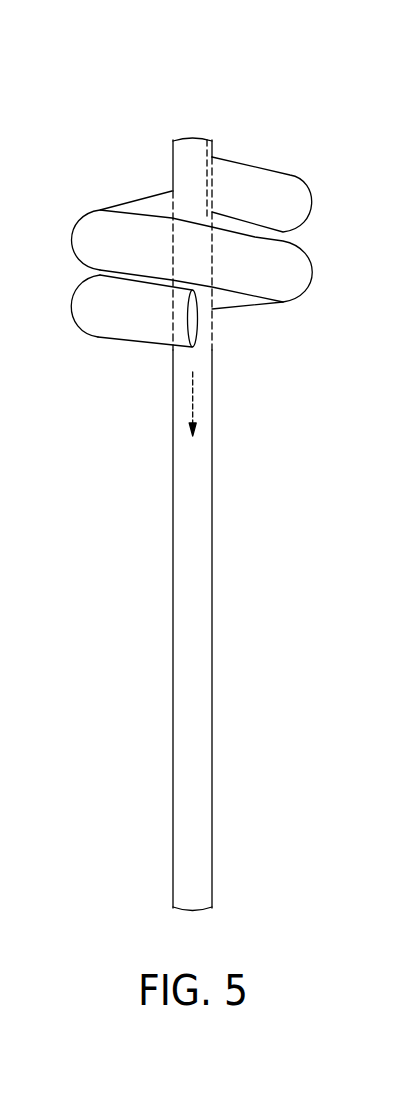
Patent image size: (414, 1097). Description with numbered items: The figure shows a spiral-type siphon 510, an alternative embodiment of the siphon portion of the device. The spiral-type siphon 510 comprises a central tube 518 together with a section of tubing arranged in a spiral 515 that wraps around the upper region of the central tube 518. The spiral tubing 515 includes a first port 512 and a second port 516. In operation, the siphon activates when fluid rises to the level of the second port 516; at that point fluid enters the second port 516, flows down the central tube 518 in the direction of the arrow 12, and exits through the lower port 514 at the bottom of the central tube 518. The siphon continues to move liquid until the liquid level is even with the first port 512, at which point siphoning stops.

The spiral-type siphon 510 is at (98, 91).
The first port 512 is at (193, 318).
The lower port 514 is at (194, 911).
The spiral tubing 515 is at (72, 308).
The second port 516 is at (206, 185).
The central tube 518 is at (173, 707).
The arrow 12 is at (192, 398).